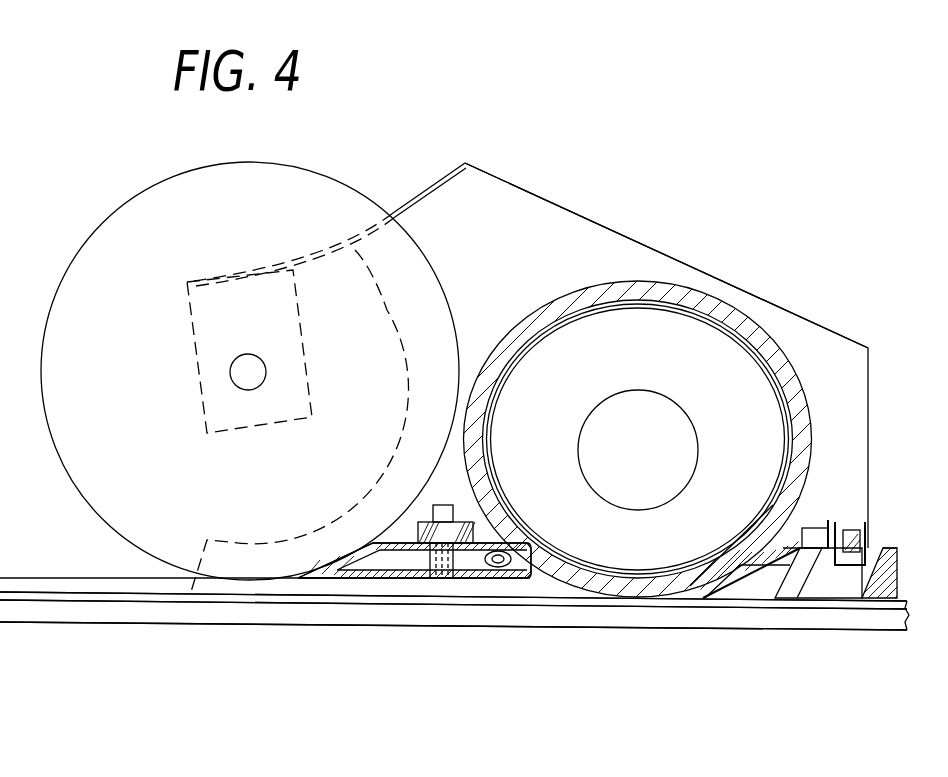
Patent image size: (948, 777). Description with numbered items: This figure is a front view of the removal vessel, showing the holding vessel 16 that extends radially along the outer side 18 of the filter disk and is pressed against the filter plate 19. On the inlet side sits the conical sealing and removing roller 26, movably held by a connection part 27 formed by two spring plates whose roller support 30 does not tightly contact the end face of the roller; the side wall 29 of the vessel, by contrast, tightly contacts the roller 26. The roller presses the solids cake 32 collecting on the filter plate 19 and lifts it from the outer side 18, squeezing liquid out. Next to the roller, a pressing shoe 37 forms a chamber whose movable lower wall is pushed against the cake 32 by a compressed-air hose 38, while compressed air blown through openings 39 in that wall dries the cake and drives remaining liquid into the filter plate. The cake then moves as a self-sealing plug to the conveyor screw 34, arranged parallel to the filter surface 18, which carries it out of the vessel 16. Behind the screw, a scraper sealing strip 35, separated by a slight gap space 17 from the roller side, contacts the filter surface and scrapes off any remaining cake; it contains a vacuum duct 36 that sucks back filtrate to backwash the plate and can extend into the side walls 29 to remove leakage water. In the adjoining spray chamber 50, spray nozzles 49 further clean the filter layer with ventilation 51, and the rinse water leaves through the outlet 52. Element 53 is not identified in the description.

The holding vessel 16 is at (624, 193).
The gap space 17 is at (493, 587).
The outer side of the filter disk 18 is at (51, 579).
The filter plate 19 is at (867, 618).
The sealing and removing roller 26 is at (295, 202).
The connection part 27 is at (317, 253).
The side wall 29 is at (498, 218).
The roller support 30 is at (213, 302).
The solids cake 32 is at (78, 582).
The conveyor screw 34 is at (705, 360).
The scraper sealing strip 35 is at (738, 585).
The vacuum duct 36 is at (795, 577).
The pressing shoe 37 is at (407, 592).
The compressed-air hose 38 is at (512, 535).
The openings 39 is at (437, 582).
The spray nozzles 49 is at (870, 532).
The spray chamber 50 is at (835, 585).
The ventilation 51 is at (843, 506).
The outlet 52 is at (888, 539).
The plate surface 53 is at (540, 579).